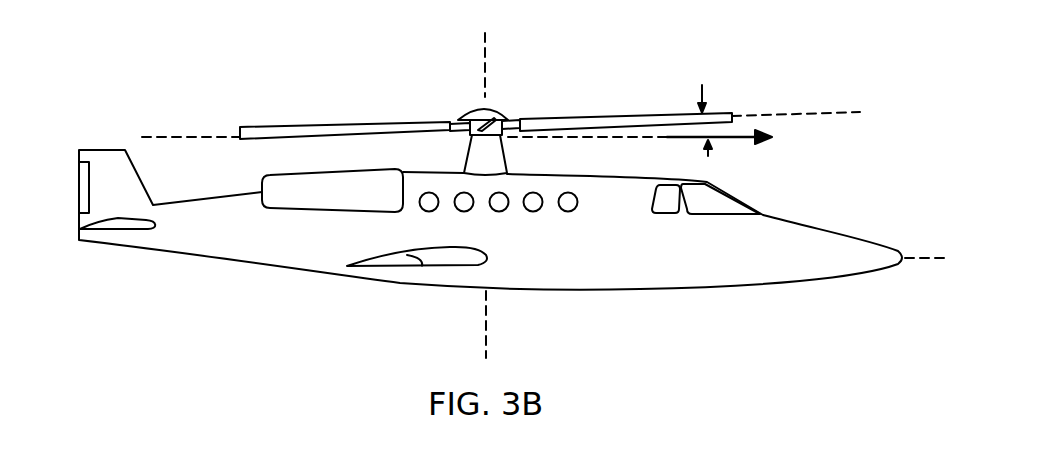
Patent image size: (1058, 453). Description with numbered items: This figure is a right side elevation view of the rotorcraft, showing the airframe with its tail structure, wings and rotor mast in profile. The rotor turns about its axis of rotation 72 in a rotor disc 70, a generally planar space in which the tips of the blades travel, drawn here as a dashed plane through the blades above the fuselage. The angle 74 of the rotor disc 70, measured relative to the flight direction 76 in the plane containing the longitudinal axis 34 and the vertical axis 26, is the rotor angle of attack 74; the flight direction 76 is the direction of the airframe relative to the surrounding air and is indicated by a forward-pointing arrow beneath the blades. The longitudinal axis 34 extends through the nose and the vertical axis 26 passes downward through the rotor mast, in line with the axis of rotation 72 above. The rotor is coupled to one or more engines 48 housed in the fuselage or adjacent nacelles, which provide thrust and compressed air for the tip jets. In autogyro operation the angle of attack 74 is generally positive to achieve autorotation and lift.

The engines 48 is at (314, 127).
The rotor axis 72 is at (488, 50).
The rotor disc 70 is at (828, 110).
The rotor angle of attack 74 is at (702, 90).
The flight direction 76 is at (740, 141).
The longitudinal axis 34 is at (922, 257).
The vertical axis 26 is at (489, 322).